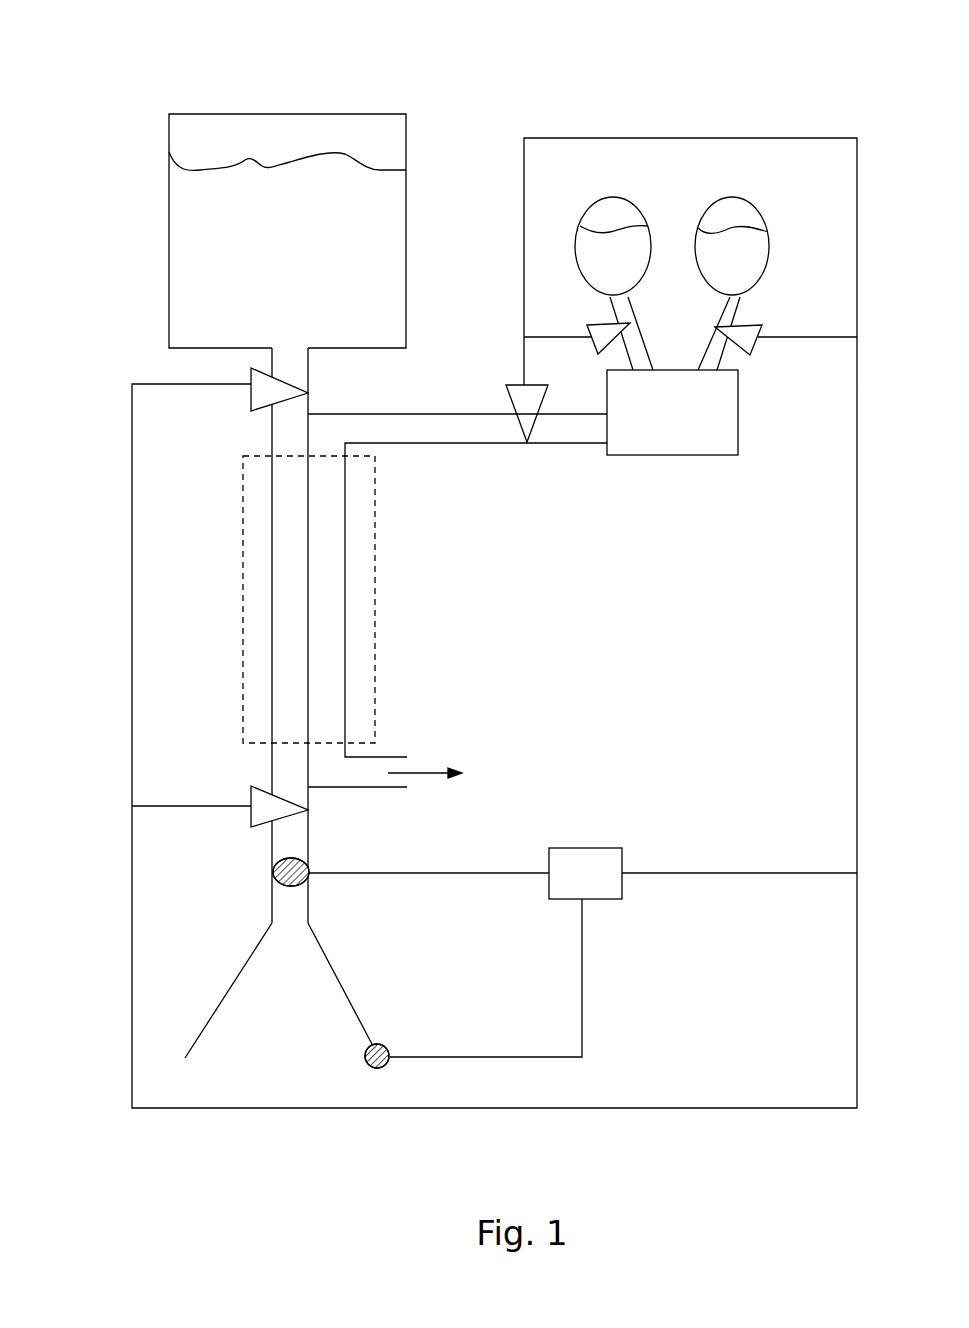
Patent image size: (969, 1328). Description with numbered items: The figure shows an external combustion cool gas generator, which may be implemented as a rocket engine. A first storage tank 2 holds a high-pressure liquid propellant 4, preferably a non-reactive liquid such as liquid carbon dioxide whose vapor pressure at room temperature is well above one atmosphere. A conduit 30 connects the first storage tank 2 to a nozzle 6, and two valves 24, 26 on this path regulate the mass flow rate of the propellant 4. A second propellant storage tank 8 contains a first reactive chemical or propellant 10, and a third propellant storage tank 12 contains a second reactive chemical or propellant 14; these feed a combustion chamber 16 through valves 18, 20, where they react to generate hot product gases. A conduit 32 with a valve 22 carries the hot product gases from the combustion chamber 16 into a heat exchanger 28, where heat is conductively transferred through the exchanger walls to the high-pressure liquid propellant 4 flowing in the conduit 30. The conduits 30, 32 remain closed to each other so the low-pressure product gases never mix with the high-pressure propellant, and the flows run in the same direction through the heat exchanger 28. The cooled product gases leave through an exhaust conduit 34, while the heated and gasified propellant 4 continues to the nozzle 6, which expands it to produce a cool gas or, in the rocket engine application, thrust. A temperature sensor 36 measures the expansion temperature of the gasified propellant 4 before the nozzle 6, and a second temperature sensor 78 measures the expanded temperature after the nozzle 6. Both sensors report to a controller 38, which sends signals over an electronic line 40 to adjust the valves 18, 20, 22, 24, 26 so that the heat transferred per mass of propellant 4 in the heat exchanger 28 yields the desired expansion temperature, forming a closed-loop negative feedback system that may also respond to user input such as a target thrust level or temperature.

The first storage tank 2 is at (220, 113).
The high-pressure liquid propellant 4 is at (203, 220).
The nozzle 6 is at (350, 985).
The second propellant storage tank 8 is at (760, 207).
The first reactive chemical or propellant 10 is at (738, 262).
The third propellant storage tank 12 is at (638, 207).
The second reactive chemical or propellant 14 is at (622, 262).
The combustion chamber 16 is at (673, 376).
The valve 18 is at (757, 348).
The valve 20 is at (587, 325).
The valve 22 is at (508, 383).
The valve 24 is at (249, 396).
The valve 26 is at (249, 823).
The heat exchanger 28 is at (375, 648).
The conduit 30 is at (272, 757).
The conduit 32 is at (428, 444).
The exhaust conduit 34 is at (375, 787).
The temperature sensor 36 is at (272, 874).
The controller 38 is at (583, 952).
The electronic line 40 is at (857, 647).
The temperature sensor 78 is at (387, 1048).